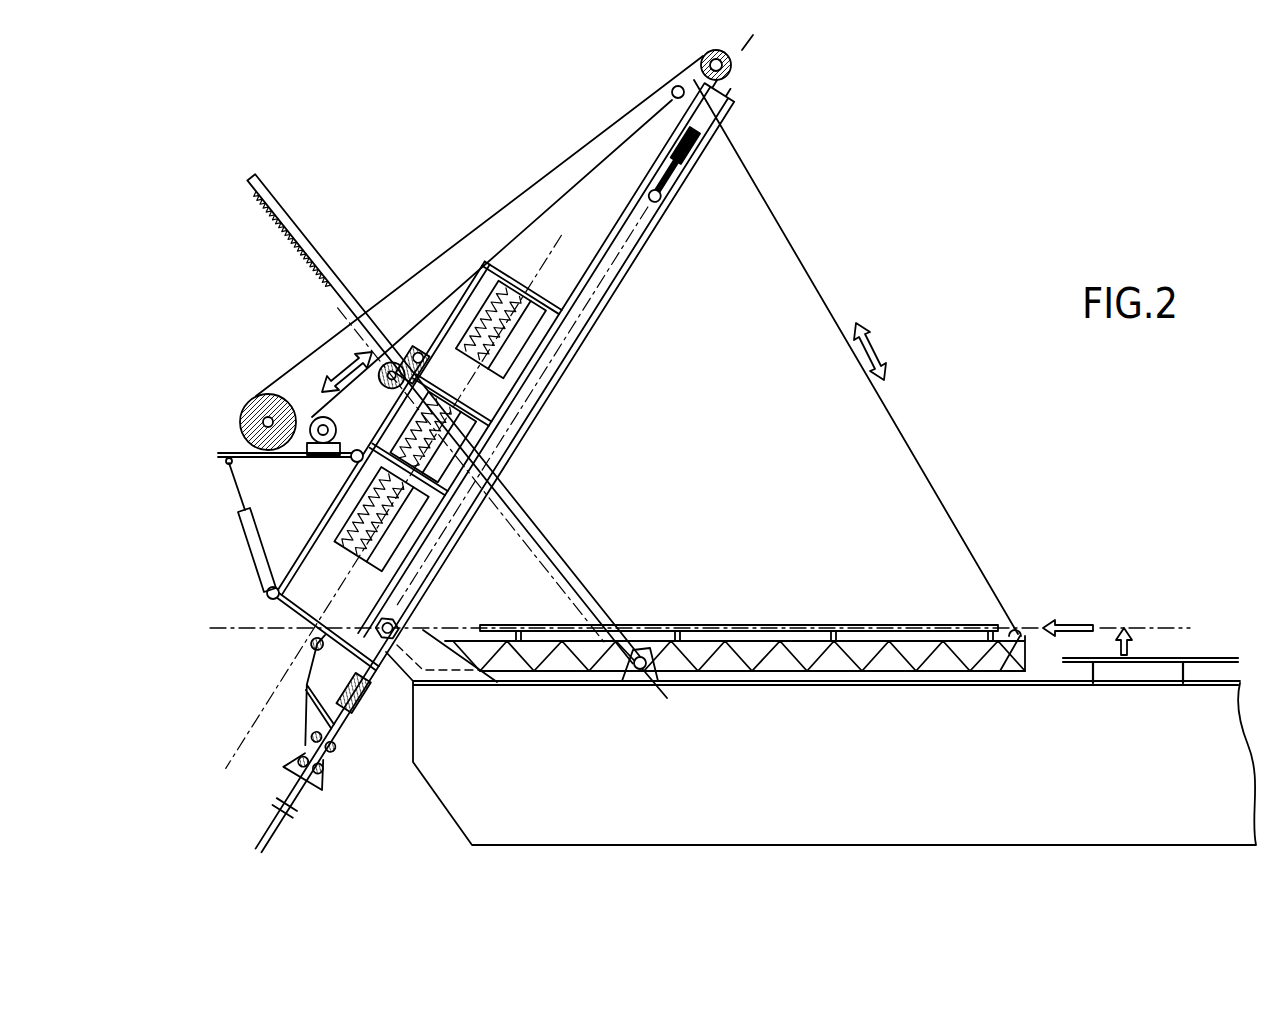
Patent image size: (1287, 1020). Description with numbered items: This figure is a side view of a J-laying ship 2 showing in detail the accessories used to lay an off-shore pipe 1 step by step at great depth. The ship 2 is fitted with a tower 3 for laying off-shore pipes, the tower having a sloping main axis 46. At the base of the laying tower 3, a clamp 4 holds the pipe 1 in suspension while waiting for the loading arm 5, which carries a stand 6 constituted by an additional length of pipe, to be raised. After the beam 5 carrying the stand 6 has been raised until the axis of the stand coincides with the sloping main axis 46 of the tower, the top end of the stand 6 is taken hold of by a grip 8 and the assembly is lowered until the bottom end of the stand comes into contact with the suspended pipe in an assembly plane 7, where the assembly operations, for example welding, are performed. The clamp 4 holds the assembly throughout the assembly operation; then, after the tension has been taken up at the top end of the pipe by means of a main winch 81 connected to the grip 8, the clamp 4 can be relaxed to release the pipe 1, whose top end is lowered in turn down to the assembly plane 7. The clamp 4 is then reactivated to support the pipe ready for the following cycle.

The pipe 1 is at (280, 828).
The ship 2 is at (447, 815).
The tower 3 is at (603, 318).
The clamp 4 is at (362, 700).
The loading arm 5 is at (800, 680).
The stand 6 is at (703, 625).
The assembly plane 7 is at (418, 630).
The grip 8 is at (660, 197).
The main axis 46 is at (738, 64).
The main winch 81 is at (248, 400).